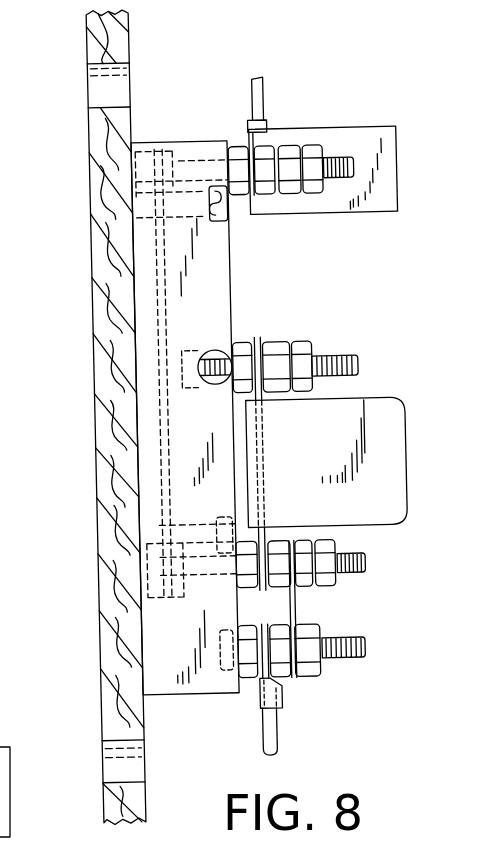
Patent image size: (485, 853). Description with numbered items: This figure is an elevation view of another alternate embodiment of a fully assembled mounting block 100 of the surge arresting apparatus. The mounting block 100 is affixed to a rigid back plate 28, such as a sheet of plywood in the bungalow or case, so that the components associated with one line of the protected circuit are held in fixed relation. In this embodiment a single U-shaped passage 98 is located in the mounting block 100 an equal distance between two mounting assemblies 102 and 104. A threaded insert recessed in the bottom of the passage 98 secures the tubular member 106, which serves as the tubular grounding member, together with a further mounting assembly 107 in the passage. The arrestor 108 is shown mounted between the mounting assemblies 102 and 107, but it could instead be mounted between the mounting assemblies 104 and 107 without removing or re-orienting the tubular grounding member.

The back plate 28 is at (98, 125).
The mounting block 100 is at (192, 150).
The U-shaped passage 98 is at (198, 353).
The mounting assembly 104 is at (327, 150).
The tubular member 106 is at (238, 343).
The mounting assembly 107 is at (363, 373).
The arrestor 108 is at (385, 502).
The mounting assembly 102 is at (342, 582).